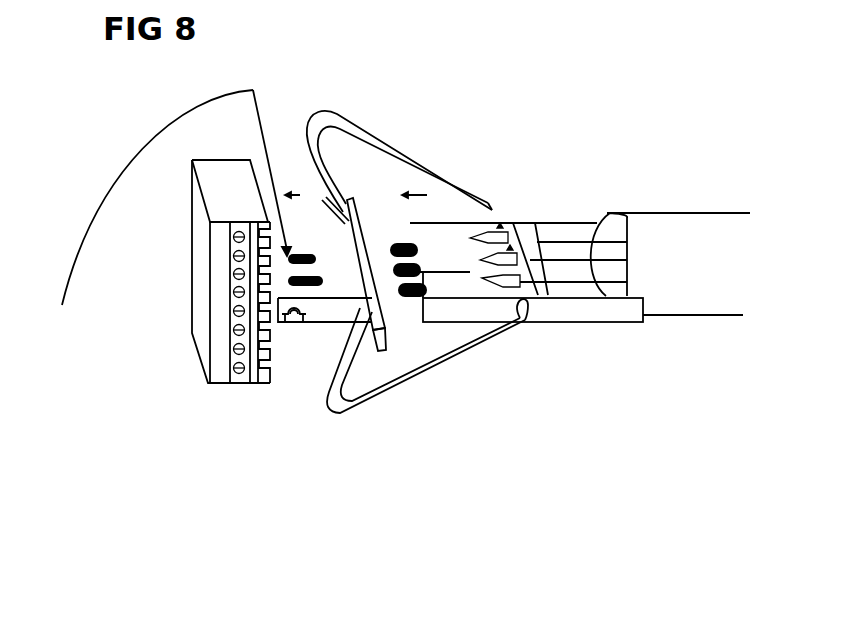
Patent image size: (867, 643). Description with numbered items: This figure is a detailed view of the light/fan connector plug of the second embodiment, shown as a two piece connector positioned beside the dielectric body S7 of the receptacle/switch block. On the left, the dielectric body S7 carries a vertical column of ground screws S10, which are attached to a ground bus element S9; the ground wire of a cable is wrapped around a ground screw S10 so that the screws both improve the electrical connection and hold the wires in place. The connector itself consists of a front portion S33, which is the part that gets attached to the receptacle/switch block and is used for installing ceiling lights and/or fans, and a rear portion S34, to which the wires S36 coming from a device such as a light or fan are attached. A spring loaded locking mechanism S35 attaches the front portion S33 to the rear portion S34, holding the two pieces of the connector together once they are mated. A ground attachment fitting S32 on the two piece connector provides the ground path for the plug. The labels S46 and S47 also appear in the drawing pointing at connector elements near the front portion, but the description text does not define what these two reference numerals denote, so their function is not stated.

The dielectric body S7 is at (222, 347).
The ground bus element S9 is at (233, 301).
The ground screws S10 is at (236, 236).
The ground attachment fitting S32 is at (313, 300).
The front portion of two piece connector S33 is at (343, 277).
The rear portion of two piece connector S34 is at (467, 265).
The spring loaded locking mechanism S35 is at (488, 337).
The wires coming from a device S36 is at (685, 275).
The actuator arc S46 is at (289, 281).
The terminals S47 is at (417, 261).